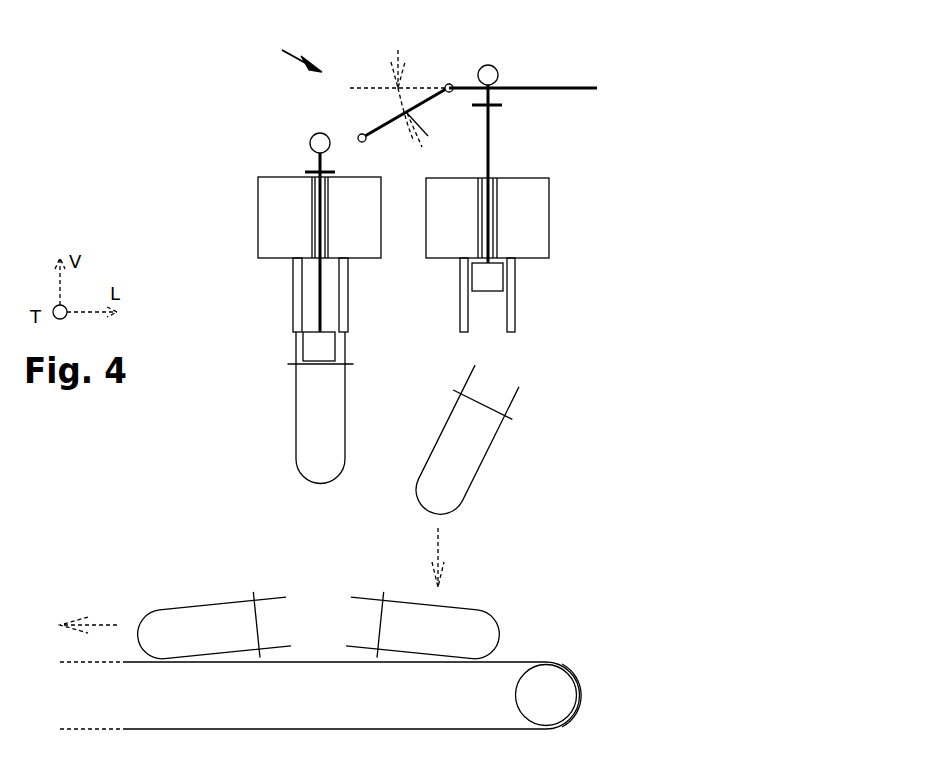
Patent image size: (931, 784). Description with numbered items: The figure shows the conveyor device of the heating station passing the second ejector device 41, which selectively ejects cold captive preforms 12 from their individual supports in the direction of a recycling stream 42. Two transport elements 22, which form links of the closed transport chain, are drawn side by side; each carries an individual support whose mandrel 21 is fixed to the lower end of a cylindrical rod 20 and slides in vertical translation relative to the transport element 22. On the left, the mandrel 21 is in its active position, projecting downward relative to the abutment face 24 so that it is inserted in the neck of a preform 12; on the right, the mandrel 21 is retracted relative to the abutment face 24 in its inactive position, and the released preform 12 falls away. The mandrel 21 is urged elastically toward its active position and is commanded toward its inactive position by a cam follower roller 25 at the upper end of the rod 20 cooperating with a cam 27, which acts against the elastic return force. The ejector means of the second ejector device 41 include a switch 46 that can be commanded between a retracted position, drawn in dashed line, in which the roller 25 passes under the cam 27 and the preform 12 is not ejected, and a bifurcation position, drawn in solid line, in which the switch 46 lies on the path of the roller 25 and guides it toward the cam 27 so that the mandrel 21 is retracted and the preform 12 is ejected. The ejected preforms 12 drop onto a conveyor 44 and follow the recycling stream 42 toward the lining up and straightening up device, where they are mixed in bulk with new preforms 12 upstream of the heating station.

The preform 12 is at (223, 602).
The cylindrical rod 20 is at (315, 307).
The mandrel 21 is at (315, 347).
The transport element 22 is at (282, 213).
The abutment face 24 is at (512, 340).
The cam follower roller 25 is at (313, 136).
The cam 27 is at (524, 86).
The second ejector device 41 is at (385, 120).
The recycling stream 42 is at (438, 540).
The conveyor 44 is at (518, 660).
The switch 46 is at (282, 50).